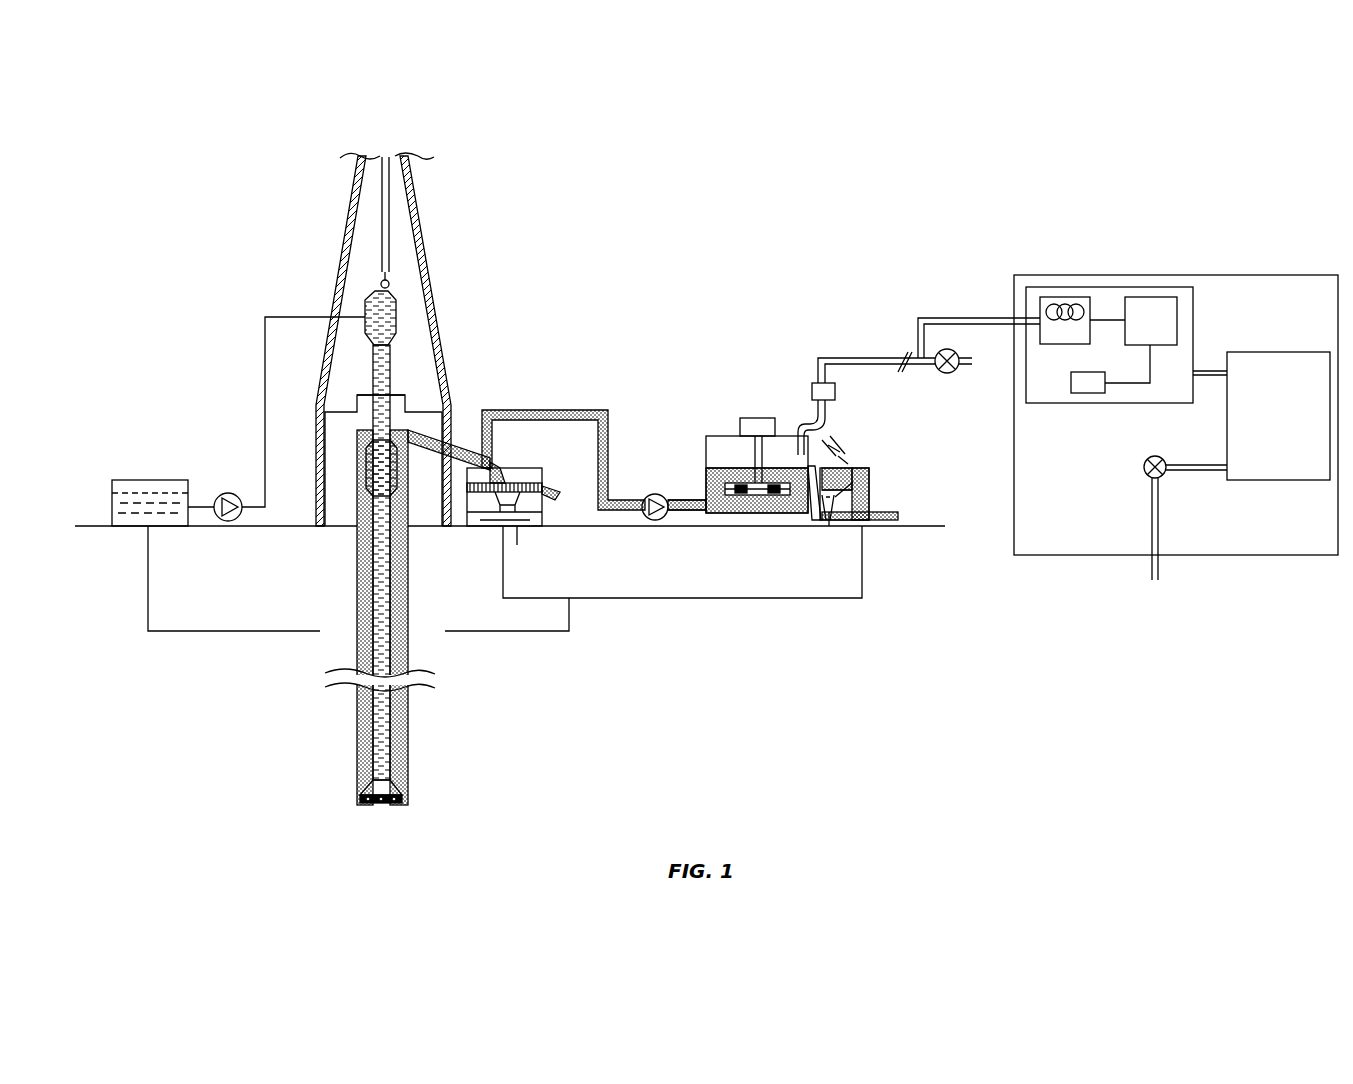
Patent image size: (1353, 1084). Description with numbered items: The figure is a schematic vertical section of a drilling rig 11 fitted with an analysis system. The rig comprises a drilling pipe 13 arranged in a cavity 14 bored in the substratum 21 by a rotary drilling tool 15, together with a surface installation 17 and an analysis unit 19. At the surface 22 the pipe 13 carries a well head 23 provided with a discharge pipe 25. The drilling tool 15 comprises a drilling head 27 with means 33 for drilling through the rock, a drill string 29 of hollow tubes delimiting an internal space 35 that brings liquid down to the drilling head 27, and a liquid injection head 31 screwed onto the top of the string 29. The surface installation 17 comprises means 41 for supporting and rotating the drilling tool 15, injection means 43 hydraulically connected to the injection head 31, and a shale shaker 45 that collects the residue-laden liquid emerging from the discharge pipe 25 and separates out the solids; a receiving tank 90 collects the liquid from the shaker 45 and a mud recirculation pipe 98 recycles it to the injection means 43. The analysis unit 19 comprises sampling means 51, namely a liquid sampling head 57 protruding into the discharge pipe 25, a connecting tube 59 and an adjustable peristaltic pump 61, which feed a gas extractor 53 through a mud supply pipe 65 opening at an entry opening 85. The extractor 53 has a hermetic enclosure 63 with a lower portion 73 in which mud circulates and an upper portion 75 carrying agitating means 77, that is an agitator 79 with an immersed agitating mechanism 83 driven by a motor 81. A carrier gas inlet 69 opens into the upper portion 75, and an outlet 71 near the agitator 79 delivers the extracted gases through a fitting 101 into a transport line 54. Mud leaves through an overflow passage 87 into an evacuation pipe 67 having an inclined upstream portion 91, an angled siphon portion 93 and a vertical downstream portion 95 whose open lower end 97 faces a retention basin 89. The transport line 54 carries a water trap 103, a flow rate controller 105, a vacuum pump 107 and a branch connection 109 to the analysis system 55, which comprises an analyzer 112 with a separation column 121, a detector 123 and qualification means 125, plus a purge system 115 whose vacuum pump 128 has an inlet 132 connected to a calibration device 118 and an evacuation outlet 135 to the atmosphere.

The drilling rig 11 is at (472, 268).
The drilling pipe 13 is at (356, 722).
The cavity 14 is at (345, 772).
The rotary drilling tool 15 is at (357, 590).
The surface installation 17 is at (582, 352).
The analysis unit 19 is at (762, 290).
The substratum 21 is at (519, 720).
The surface 22 is at (105, 525).
The well head 23 is at (425, 416).
The discharge pipe 25 is at (401, 562).
The drilling head 27 is at (392, 805).
The drill string 29 is at (400, 597).
The liquid injection head 31 is at (396, 322).
The means for drilling 33 is at (368, 805).
The internal space 35 is at (381, 705).
The means for supporting and driving the drilling tool 41 is at (352, 394).
The injection means 43 is at (162, 480).
The shale shaker 45 is at (522, 474).
The sampling means 51 is at (575, 408).
The gas extractor 53 is at (692, 338).
The transport line 54 is at (832, 322).
The analysis system 55 is at (1092, 280).
The liquid sampling head 57 is at (492, 458).
The connecting tube 59 is at (608, 420).
The peristaltic pump 61 is at (648, 498).
The enclosure 63 is at (706, 450).
The mud supply pipe 65 is at (704, 500).
The evacuation pipe 67 is at (823, 505).
The carrier gas inlet 69 is at (848, 455).
The extracted gas outlet 71 is at (815, 450).
The lower portion 73 is at (745, 495).
The upper portion 75 is at (712, 460).
The agitating means 77 is at (728, 420).
The agitator 79 is at (716, 438).
The motor 81 is at (750, 418).
The agitating mechanism 83 is at (762, 496).
The entry opening 85 is at (705, 510).
The overflow passage 87 is at (782, 446).
The retention basin 89 is at (902, 515).
The receiving tank 90 is at (518, 528).
The upstream portion 91 is at (812, 470).
The angled portion 93 is at (836, 520).
The downstream portion 95 is at (875, 472).
The lower end 97 is at (875, 500).
The mud recirculation pipe 98 is at (190, 632).
The fitting 101 is at (805, 455).
The water trap 103 is at (835, 393).
The flow rate controller 105 is at (835, 355).
The vacuum pump 107 is at (952, 373).
The branch connection 109 is at (940, 318).
The analyzer 112 is at (1180, 282).
The purge system 115 is at (1130, 480).
The calibration device 118 is at (1270, 480).
The separation column 121 is at (1050, 297).
The detector 123 is at (1138, 297).
The means for qualification and/or quantification 125 is at (1080, 393).
The vacuum pump 128 is at (1152, 456).
The inlet 132 is at (1190, 462).
The evacuation outlet 135 is at (1168, 568).